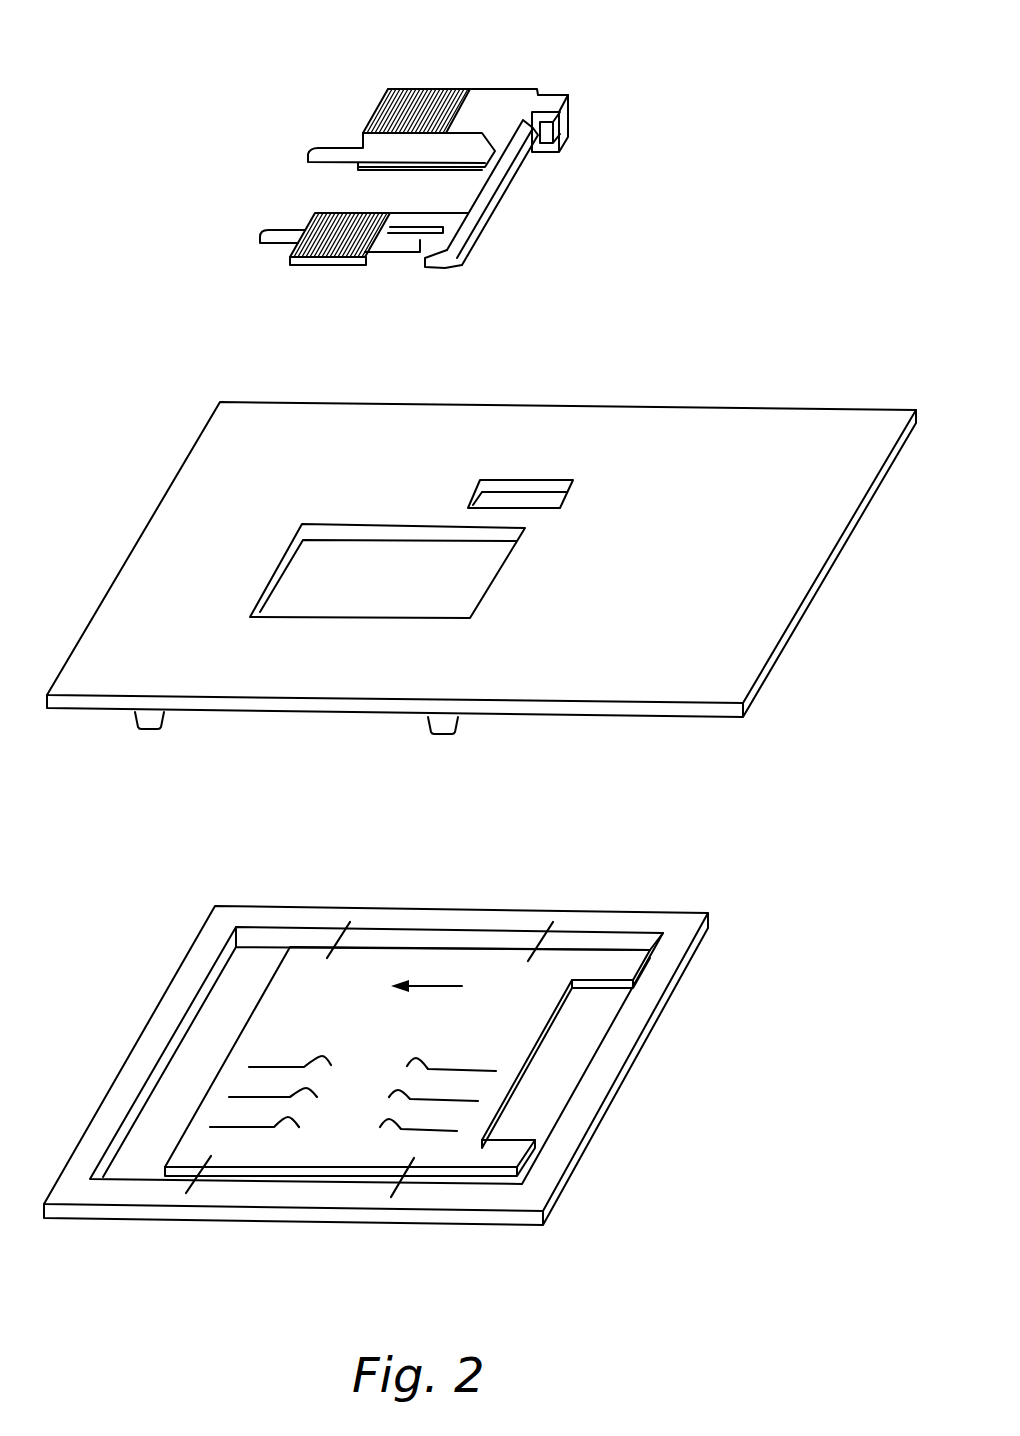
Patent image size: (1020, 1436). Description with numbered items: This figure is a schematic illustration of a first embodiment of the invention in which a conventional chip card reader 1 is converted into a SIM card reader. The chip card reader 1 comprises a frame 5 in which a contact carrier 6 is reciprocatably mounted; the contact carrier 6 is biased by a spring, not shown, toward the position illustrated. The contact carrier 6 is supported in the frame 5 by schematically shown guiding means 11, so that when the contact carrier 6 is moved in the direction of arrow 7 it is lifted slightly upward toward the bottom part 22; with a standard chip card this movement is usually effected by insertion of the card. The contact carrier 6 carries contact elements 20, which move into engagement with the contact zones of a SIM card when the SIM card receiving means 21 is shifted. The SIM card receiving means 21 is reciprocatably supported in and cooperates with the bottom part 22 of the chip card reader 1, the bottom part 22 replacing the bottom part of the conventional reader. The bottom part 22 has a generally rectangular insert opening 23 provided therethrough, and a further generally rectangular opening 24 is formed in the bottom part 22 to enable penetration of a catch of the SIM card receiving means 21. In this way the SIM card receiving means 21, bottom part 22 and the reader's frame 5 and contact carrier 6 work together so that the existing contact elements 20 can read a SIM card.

The chip card reader 1 is at (376, 1064).
The frame 5 is at (120, 1193).
The contact carrier 6 is at (263, 1042).
The arrow 7 is at (432, 986).
The guiding means 11 is at (336, 944).
The contact elements 20 is at (439, 1127).
The SIM card receiving means 21 is at (494, 80).
The bottom part 22 is at (481, 556).
The insert opening 23 is at (298, 618).
The opening 24 is at (527, 478).